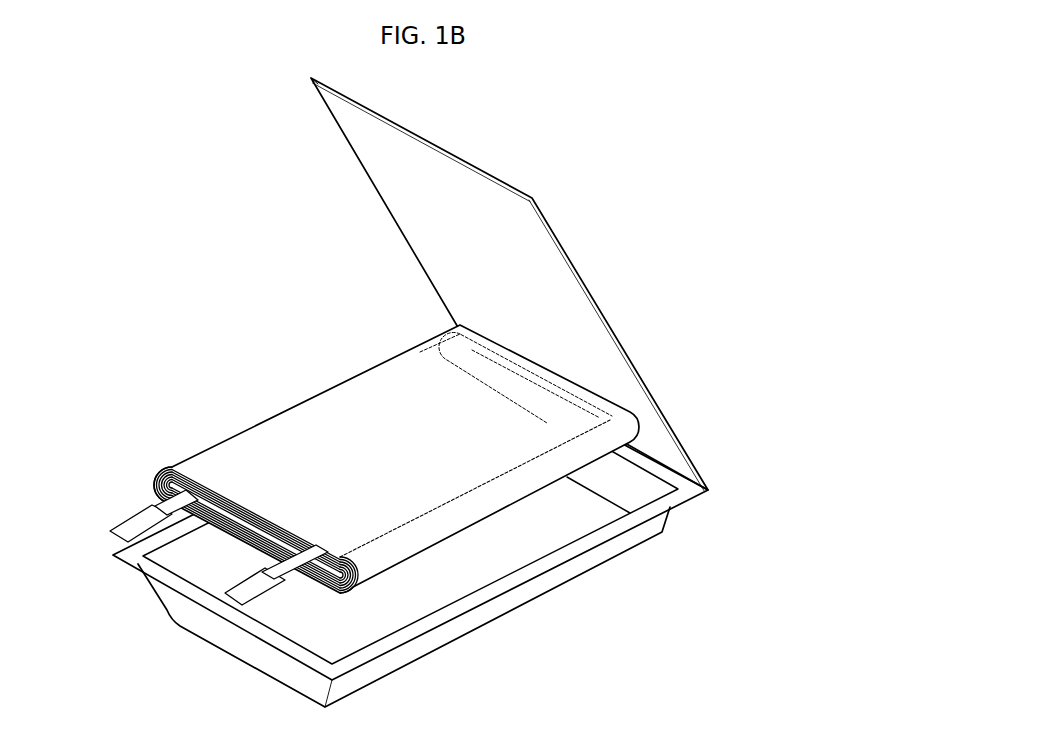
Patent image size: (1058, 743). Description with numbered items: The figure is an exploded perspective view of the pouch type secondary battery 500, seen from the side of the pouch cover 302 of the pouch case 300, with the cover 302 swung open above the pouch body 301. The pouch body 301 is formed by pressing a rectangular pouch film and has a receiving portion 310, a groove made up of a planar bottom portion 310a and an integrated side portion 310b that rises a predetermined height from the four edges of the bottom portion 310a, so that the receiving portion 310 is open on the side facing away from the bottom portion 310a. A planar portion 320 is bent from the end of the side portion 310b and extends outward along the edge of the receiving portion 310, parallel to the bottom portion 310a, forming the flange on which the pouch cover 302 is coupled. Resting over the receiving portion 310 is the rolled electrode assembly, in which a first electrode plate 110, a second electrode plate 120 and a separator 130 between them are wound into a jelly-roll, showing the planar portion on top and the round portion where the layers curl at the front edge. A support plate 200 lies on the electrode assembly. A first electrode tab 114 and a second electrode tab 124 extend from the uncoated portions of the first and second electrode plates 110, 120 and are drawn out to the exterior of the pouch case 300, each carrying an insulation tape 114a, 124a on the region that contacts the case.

The secondary battery 500 is at (428, 399).
The pouch case 300 is at (472, 405).
The pouch cover 302 is at (684, 467).
The pouch body 301 is at (440, 549).
The receiving portion 310 is at (410, 539).
The bottom portion 310a is at (637, 638).
The side portion 310b is at (531, 581).
The planar portion 320 is at (287, 643).
The first electrode plate 110 is at (332, 494).
The second electrode plate 120 is at (162, 493).
The separator 130 is at (163, 485).
The first electrode tab 114 is at (177, 527).
The insulation tape 114a is at (136, 514).
The second electrode tab 124 is at (248, 594).
The insulation tape 124a is at (262, 567).
The support plate 200 is at (421, 350).